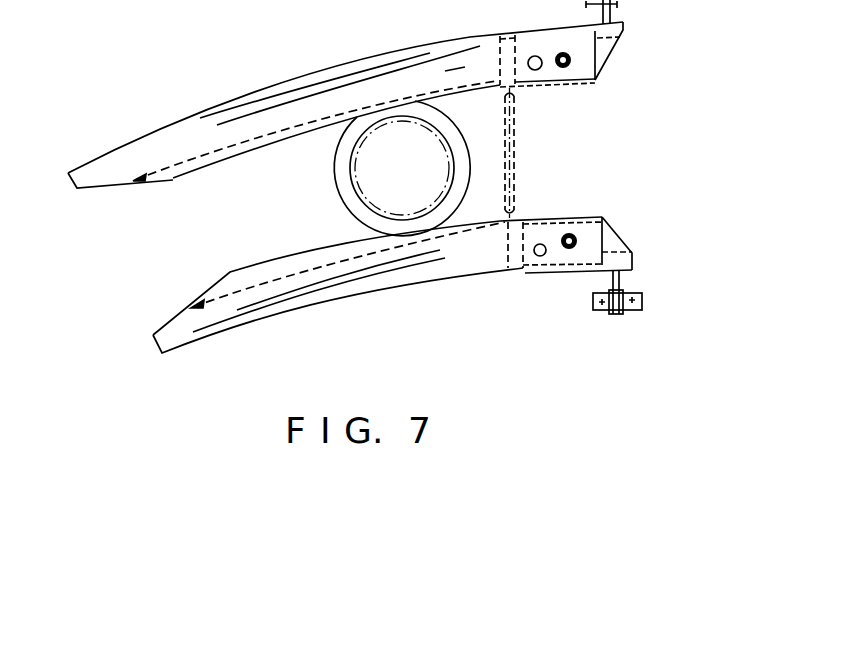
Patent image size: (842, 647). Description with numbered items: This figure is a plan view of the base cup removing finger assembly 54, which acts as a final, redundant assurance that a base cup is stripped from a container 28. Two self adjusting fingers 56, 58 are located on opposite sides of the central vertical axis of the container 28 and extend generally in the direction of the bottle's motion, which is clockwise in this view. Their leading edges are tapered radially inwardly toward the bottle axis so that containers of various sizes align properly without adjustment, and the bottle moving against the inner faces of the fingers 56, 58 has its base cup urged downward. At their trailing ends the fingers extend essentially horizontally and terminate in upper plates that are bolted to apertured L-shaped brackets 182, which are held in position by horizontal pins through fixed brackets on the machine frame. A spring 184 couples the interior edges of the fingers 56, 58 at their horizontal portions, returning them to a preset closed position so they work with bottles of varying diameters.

The clamp assembly 54 is at (662, 123).
The self adjusting finger 56 is at (328, 95).
The self adjusting finger 58 is at (357, 280).
The container 28 is at (335, 181).
The spring 184 is at (522, 153).
The L-shaped bracket 182 is at (627, 33).